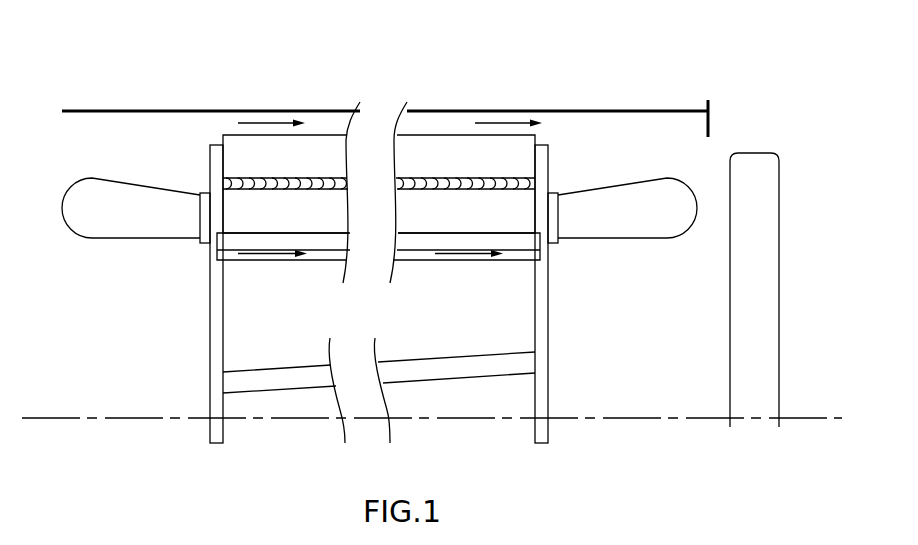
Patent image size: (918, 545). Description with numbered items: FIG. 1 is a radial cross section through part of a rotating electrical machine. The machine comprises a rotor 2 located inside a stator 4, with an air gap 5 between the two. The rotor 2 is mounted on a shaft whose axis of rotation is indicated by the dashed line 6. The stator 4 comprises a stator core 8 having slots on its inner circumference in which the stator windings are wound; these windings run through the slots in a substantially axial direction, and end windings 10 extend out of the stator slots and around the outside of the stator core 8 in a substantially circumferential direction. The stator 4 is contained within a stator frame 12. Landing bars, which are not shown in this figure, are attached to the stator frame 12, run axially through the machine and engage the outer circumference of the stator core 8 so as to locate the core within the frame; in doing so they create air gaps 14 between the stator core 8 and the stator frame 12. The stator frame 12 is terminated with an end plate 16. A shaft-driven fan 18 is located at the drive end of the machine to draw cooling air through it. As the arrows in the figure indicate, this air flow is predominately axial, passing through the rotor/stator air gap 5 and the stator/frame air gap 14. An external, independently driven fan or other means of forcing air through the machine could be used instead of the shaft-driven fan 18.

The rotor 2 is at (482, 332).
The stator 4 is at (425, 145).
The air gap 5 is at (528, 253).
The axis of rotation 6 is at (167, 418).
The stator core 8 is at (510, 200).
The end windings 10 is at (100, 222).
The stator frame 12 is at (572, 111).
The air gaps 14 is at (325, 125).
The end plate 16 is at (708, 119).
The shaft-driven fan 18 is at (768, 270).